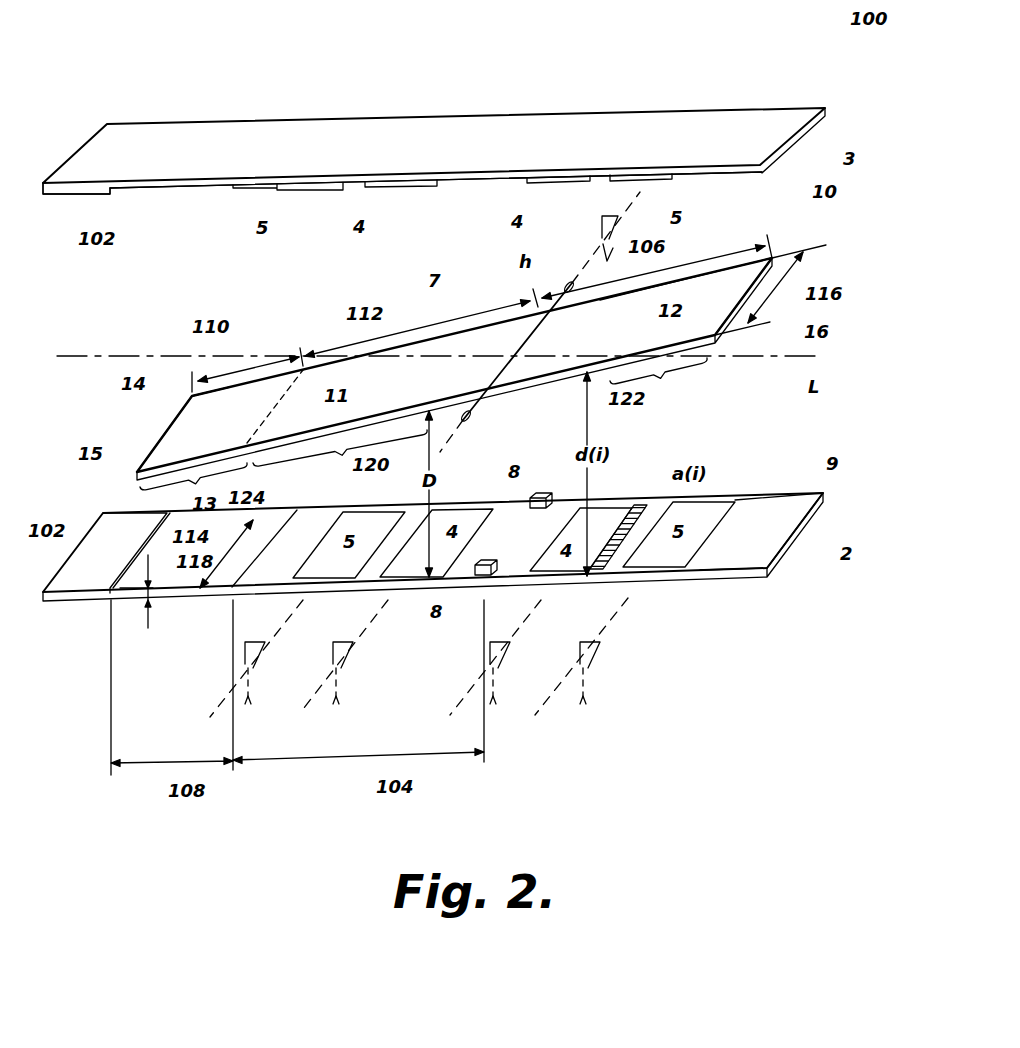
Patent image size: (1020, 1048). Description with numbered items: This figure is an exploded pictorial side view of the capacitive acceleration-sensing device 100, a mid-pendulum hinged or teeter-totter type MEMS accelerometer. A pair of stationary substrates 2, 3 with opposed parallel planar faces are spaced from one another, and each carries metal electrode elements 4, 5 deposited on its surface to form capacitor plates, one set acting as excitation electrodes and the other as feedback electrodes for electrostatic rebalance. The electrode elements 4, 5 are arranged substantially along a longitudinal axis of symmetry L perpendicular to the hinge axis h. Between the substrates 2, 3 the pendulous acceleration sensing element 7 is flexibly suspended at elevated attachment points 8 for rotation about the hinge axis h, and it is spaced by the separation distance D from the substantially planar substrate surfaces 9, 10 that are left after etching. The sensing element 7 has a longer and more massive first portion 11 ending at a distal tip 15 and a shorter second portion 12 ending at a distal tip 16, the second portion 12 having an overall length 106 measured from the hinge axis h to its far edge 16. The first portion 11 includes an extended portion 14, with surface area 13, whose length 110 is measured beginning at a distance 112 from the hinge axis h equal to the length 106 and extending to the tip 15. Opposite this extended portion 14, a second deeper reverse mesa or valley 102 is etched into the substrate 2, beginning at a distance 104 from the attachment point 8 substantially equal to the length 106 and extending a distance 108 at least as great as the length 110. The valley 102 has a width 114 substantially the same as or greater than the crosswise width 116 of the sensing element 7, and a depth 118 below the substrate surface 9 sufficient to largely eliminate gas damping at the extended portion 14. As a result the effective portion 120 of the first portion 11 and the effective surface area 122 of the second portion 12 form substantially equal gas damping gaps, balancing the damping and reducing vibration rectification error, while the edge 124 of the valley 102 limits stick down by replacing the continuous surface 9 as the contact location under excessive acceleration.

The capacitive acceleration-sensing device 100 is at (830, 70).
The stationary substrate 3 is at (795, 142).
The substantially planar surface 10 is at (714, 178).
The reverse mesa or valley 102 is at (149, 200).
The electrode element 5 is at (272, 226).
The electrode element 4 is at (395, 190).
The first sensing element portion 11 is at (342, 407).
The second sensing element portion 12 is at (677, 322).
The surface area 13 is at (195, 492).
The extended portion 14 is at (190, 396).
The distal edge or tip 15 is at (158, 440).
The distal edge or tip 16 is at (728, 342).
The acceleration sensing element 7 is at (470, 340).
The hinge axis h is at (588, 258).
The length of the extended portion 110 is at (250, 368).
The distance from the hinge axis 112 is at (400, 334).
The overall length of the second sensing element portion 106 is at (682, 264).
The width of the acceleration sensing element 116 is at (776, 290).
The effective portion 120 is at (360, 456).
The effective surface area 122 is at (620, 390).
The edge 124 is at (265, 533).
The longitudinal axis of symmetry L is at (790, 360).
The separation distance D is at (429, 480).
The stationary substrate 2 is at (800, 532).
The substantially planar surface 9 is at (773, 503).
The width of the valley 114 is at (232, 550).
The depth of the valley 118 is at (153, 583).
The attachment point 8 is at (446, 610).
The extent of the valley 108 is at (168, 788).
The distance from the attachment point 104 is at (376, 784).